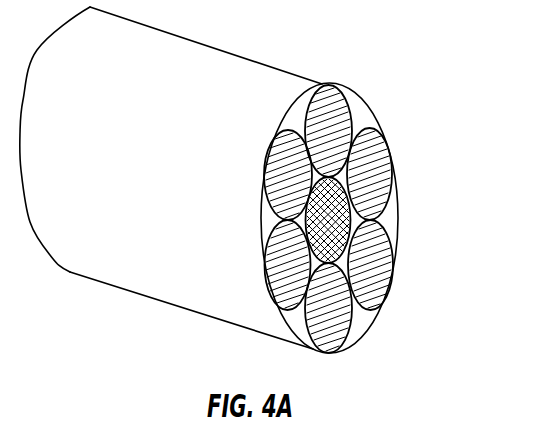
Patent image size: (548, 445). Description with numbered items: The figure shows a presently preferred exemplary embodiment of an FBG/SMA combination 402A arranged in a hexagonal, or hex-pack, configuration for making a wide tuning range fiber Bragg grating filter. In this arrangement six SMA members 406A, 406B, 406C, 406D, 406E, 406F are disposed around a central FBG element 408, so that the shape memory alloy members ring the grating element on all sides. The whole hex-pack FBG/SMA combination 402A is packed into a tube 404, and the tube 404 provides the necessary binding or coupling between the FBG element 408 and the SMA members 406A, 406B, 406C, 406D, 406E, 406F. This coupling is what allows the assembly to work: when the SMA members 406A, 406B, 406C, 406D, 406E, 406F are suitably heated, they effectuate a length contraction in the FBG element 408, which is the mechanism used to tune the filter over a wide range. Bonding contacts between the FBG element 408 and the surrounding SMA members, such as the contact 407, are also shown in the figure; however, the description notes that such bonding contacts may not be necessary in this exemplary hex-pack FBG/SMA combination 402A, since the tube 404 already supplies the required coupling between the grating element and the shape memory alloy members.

The FBG/SMA combination 402A is at (334, 48).
The tube 404 is at (232, 50).
The SMA member 406A is at (392, 278).
The SMA member 406B is at (352, 338).
The SMA member 406C is at (290, 304).
The SMA member 406D is at (268, 193).
The SMA member 406E is at (345, 100).
The SMA member 406F is at (397, 190).
The bonding contact 407 is at (350, 199).
The FBG element 408 is at (259, 211).